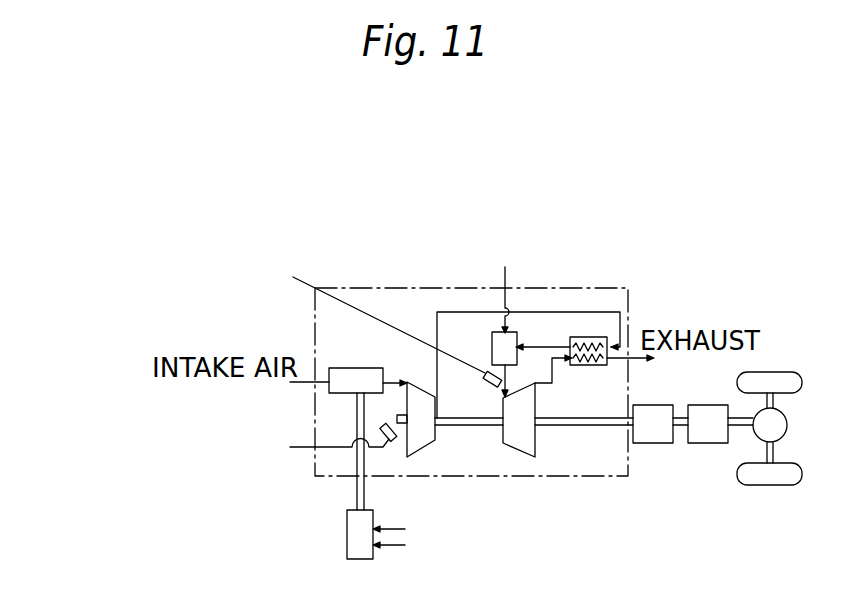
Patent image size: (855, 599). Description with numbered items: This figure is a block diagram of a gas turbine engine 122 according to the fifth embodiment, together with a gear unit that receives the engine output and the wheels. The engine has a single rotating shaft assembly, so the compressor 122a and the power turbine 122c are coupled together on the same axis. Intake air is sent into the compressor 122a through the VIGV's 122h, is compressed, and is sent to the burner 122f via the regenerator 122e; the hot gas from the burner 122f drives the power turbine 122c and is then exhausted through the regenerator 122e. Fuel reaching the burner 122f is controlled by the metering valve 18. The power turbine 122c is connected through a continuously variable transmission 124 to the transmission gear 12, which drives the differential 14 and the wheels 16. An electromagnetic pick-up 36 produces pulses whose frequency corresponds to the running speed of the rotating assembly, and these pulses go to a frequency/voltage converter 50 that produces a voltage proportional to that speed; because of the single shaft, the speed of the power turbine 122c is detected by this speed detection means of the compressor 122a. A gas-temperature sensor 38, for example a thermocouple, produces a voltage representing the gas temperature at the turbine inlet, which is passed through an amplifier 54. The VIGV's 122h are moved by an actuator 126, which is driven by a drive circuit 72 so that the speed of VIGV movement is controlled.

The gas turbine engine 122 is at (437, 287).
The VIGV's 122h is at (368, 368).
The compressor 122a is at (432, 442).
The power turbine 122c is at (536, 442).
The burner 122f is at (492, 350).
The regenerator 122e is at (590, 366).
The metering valve 18 is at (607, 256).
The amplifier 54 is at (349, 309).
The gas-temperature sensor 38 is at (489, 386).
The frequency/voltage converter 50 is at (194, 432).
The electromagnetic pick-up 36 is at (386, 442).
The actuator 126 is at (347, 538).
The drive circuit 72 is at (559, 538).
The continuously variable transmission 124 is at (655, 443).
The transmission 12 is at (712, 443).
The differential 14 is at (789, 425).
The wheels 16 is at (800, 373).